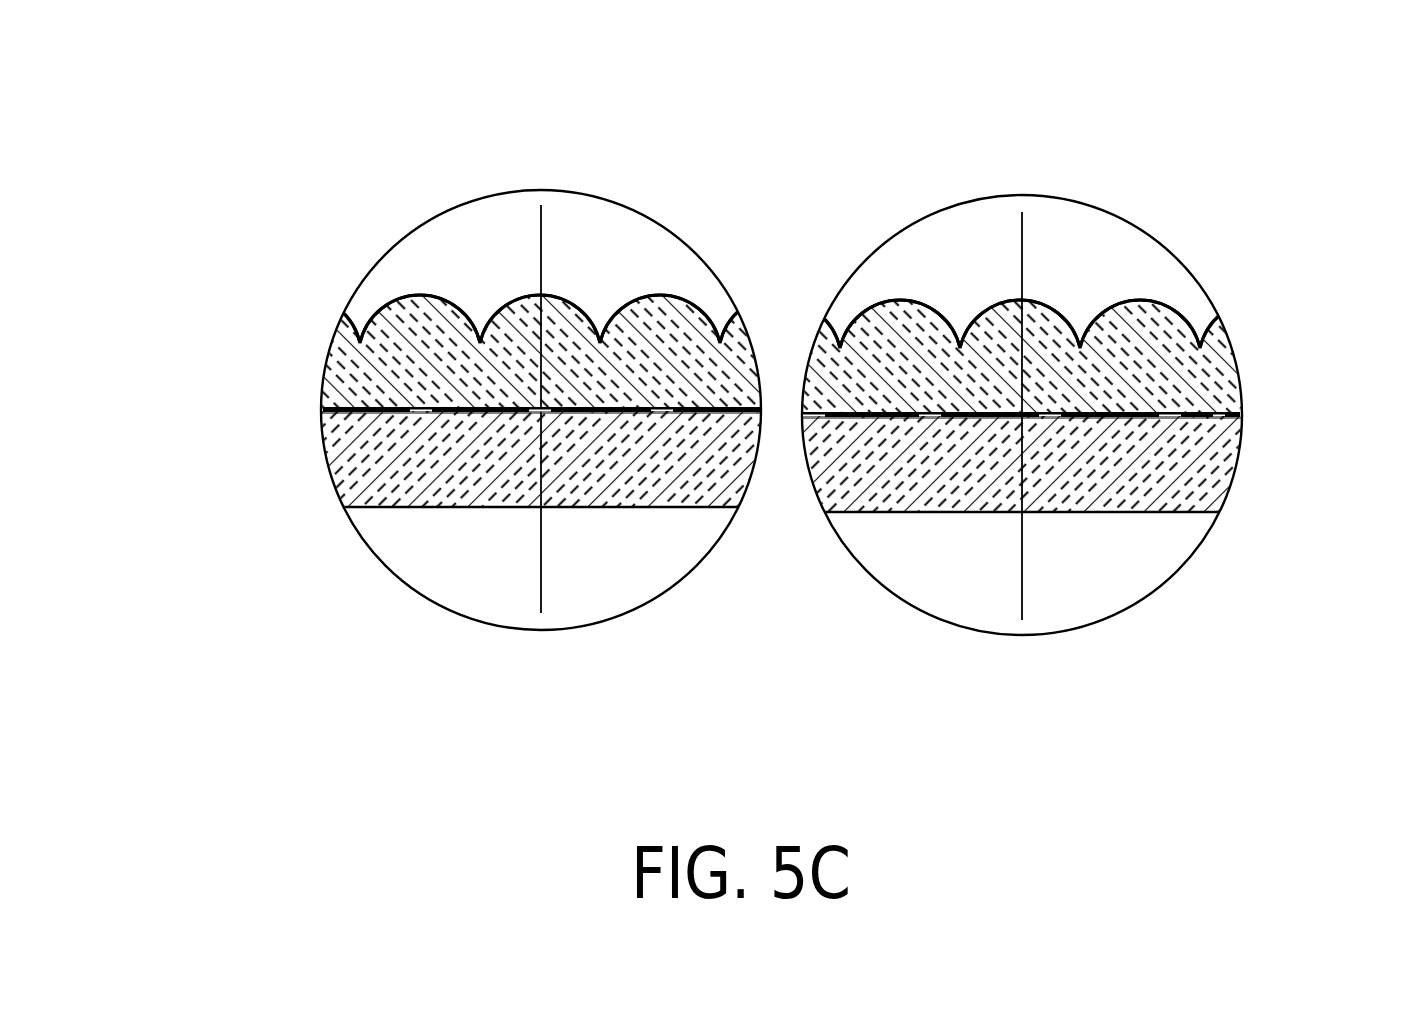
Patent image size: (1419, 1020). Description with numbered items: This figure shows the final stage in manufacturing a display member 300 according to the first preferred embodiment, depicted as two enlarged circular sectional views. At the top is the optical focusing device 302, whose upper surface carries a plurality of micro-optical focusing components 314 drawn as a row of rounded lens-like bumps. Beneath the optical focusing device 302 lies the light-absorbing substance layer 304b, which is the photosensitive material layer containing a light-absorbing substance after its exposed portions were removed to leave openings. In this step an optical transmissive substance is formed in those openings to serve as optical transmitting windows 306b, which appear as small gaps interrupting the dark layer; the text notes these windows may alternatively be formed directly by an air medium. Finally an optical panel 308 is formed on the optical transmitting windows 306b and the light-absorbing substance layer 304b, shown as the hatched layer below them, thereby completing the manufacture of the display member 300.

The display member 300 is at (172, 65).
The optical focusing device 302 is at (697, 398).
The light-absorbing substance layer 304b is at (325, 409).
The optical transmitting windows 306b is at (415, 412).
The optical panel 308 is at (417, 413).
The micro-optical focusing components 314 is at (406, 332).